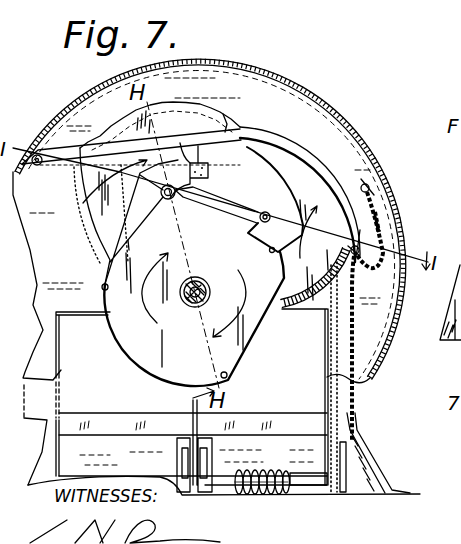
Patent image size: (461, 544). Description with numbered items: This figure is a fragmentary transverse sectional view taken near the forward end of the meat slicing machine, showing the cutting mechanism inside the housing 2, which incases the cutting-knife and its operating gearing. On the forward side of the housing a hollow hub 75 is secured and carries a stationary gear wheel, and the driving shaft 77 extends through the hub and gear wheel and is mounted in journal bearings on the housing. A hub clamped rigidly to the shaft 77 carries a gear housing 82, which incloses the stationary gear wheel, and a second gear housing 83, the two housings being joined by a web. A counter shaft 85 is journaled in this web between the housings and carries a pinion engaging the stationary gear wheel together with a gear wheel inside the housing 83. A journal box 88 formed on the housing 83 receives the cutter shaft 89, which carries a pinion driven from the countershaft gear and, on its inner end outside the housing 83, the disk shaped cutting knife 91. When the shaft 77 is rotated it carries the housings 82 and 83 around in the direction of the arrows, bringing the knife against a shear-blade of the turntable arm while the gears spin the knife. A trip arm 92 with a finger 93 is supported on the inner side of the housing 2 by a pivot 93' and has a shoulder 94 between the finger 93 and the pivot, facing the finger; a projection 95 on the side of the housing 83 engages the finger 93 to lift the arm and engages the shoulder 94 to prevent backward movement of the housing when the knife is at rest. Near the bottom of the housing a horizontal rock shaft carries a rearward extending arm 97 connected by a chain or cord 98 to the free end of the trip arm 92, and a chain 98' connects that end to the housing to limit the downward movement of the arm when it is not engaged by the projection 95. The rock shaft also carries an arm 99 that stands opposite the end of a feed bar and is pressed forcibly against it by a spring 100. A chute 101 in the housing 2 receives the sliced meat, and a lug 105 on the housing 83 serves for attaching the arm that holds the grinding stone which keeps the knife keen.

The housing 2 is at (216, 63).
The hollow hub 75 is at (190, 307).
The driving shaft 77 is at (208, 290).
The gear housing 82 is at (138, 340).
The gear housing 83 is at (120, 128).
The counter shaft 85 is at (163, 198).
The journal box 88 is at (255, 226).
The cutter shaft 89 is at (265, 212).
The disk shaped cutting knife 91 is at (300, 312).
The trip arm 92 is at (241, 136).
The finger 93 is at (228, 106).
The pivot 93' is at (40, 182).
The shoulder 94 is at (172, 140).
The projection 95 is at (188, 200).
The rearward extending arm 97 is at (350, 458).
The chain or cord 98 is at (368, 309).
The chain 98' is at (413, 219).
The arm 99 is at (193, 403).
The spring 100 is at (263, 494).
The chute 101 is at (313, 473).
The lug 105 is at (283, 152).